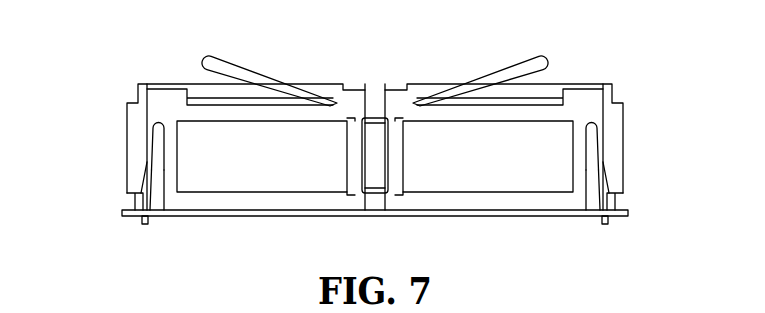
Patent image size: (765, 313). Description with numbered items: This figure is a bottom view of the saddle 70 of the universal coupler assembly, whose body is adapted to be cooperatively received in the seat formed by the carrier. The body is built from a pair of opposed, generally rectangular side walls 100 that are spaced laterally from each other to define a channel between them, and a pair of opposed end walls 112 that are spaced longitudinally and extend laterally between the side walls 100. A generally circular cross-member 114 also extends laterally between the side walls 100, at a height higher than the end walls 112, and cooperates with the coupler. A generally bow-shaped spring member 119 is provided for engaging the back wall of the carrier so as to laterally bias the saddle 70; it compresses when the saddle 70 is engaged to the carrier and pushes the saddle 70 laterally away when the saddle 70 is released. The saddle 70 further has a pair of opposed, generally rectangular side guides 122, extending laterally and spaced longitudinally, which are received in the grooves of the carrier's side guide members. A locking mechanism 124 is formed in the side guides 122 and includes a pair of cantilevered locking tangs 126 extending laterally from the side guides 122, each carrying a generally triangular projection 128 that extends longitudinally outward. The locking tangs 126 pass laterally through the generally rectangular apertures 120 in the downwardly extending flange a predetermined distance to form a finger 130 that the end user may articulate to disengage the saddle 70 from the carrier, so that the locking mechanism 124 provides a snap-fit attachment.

The saddle 70 is at (384, 77).
The side walls 100 is at (537, 115).
The end walls 112 is at (137, 150).
The cross-member 114 is at (372, 148).
The spring member 119 is at (239, 60).
The apertures 120 is at (133, 186).
The side guides 122 is at (168, 103).
The locking mechanism 124 is at (127, 220).
The locking tangs 126 is at (150, 200).
The projection 128 is at (155, 137).
The finger 130 is at (145, 219).